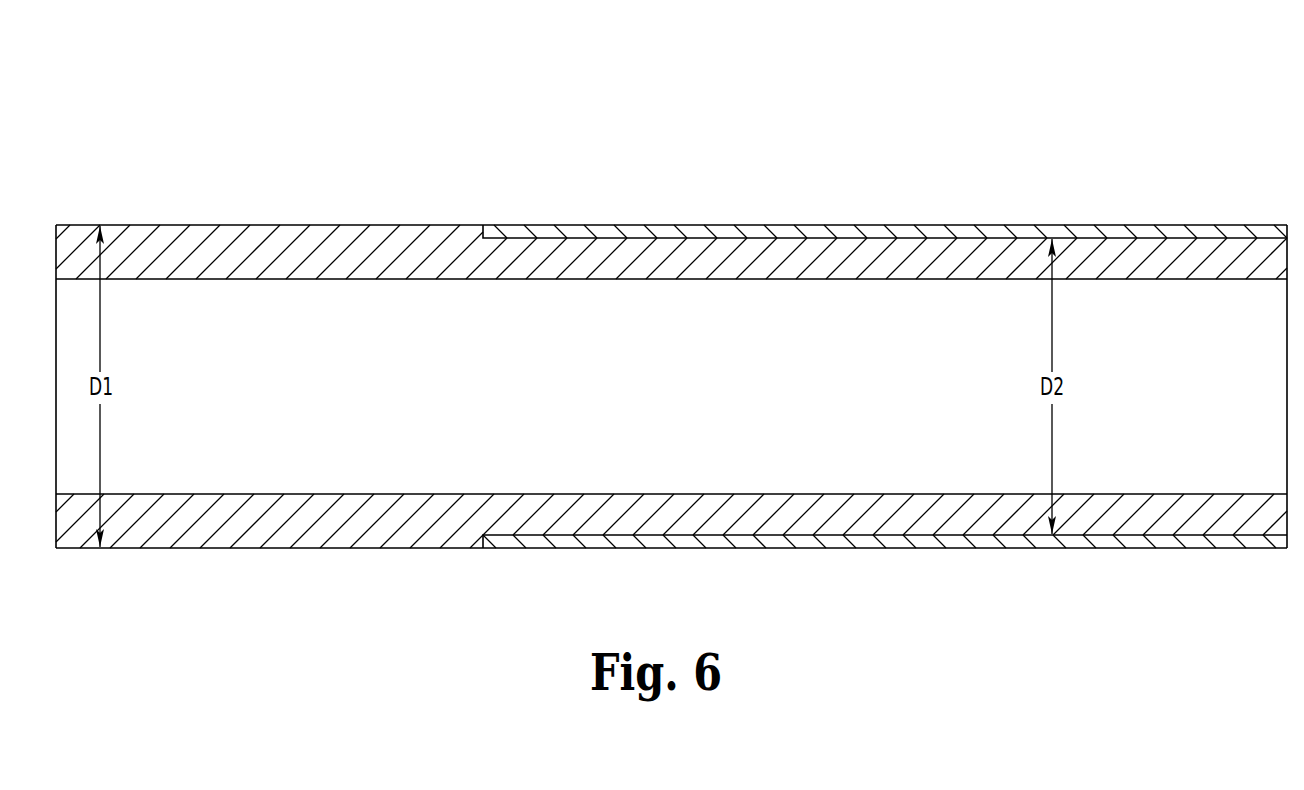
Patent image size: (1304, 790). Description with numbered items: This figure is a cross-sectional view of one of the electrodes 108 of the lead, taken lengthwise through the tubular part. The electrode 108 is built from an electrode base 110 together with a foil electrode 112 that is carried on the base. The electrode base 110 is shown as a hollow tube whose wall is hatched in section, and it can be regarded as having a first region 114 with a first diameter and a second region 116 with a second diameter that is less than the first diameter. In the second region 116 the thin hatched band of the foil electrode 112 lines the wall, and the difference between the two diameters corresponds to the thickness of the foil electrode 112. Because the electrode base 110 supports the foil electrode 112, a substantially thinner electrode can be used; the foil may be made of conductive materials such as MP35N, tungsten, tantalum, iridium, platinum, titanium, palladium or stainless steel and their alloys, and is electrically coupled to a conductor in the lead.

The electrode 108 is at (606, 95).
The electrode base 110 is at (237, 526).
The foil electrode 112 is at (913, 538).
The first region 114 is at (200, 163).
The second region 116 is at (940, 155).